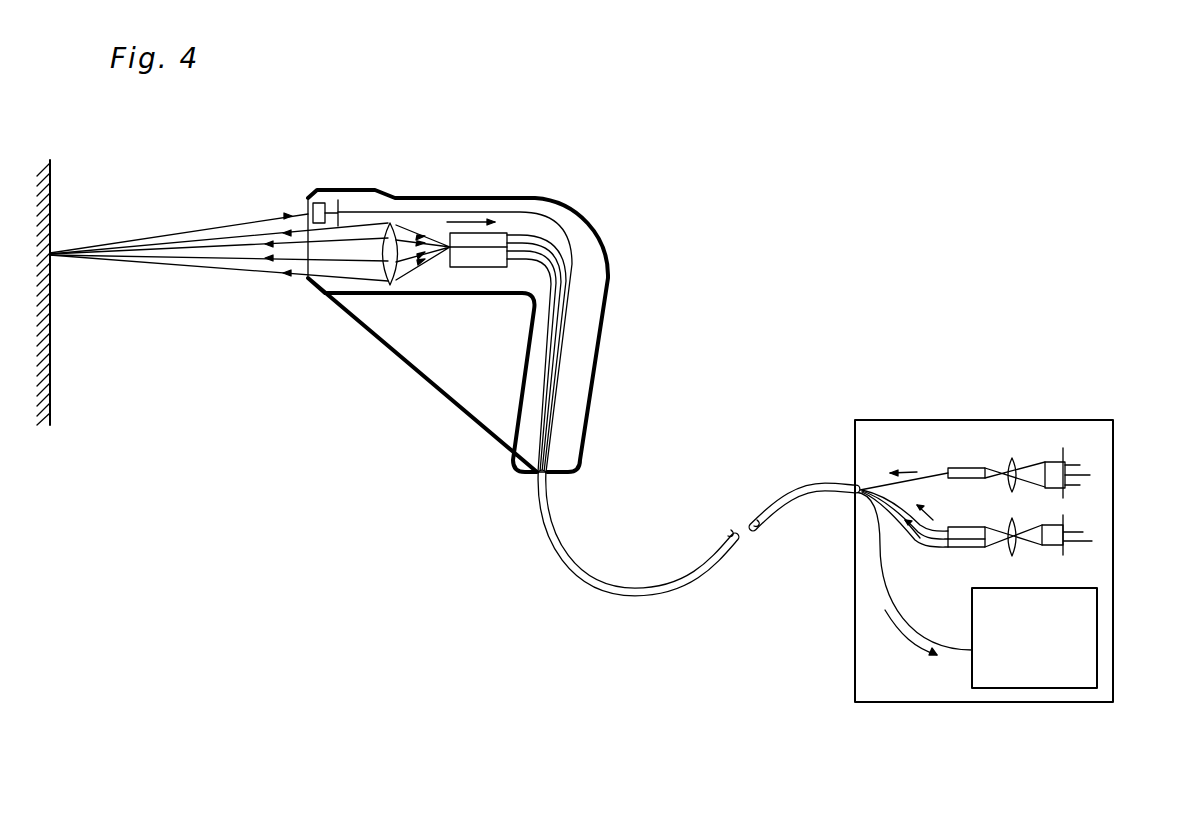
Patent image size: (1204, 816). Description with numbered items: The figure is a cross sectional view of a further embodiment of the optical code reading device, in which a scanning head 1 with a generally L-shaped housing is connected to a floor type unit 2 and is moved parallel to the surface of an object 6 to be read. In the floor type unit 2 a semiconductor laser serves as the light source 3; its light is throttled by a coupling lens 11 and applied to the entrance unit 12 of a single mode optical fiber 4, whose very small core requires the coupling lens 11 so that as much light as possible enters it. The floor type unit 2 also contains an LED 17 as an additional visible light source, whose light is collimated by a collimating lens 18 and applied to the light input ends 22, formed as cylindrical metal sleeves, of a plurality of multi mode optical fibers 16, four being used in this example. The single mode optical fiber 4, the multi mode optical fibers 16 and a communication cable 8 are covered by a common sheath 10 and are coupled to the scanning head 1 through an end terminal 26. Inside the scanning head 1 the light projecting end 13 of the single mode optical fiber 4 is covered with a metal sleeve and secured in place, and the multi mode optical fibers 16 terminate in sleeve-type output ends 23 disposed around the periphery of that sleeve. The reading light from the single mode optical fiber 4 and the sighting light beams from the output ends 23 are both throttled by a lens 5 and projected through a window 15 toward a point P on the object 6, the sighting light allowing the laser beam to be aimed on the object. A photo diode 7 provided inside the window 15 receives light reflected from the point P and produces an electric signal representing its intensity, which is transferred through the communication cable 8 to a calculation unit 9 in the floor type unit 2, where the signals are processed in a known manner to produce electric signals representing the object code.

The scanning head 1 is at (577, 215).
The floor type unit 2 is at (1058, 702).
The light source 3 is at (1055, 468).
The single mode optical fiber 4 is at (567, 290).
The lens 5 is at (388, 228).
The object 6 is at (55, 280).
The photo diode 7 is at (320, 208).
The communication cable 8 is at (570, 350).
The calculation unit 9 is at (1068, 632).
The sheath 10 is at (705, 568).
The lens 11 is at (1013, 460).
The entrance unit 12 is at (965, 471).
The light projecting end 13 is at (485, 248).
The window 15 is at (307, 253).
The multi mode optical fibers 16 is at (557, 282).
The LED 17 is at (1050, 530).
The collimating lens 18 is at (1022, 550).
The light input end 22 is at (965, 532).
The output ends 23 is at (466, 260).
The end terminal 26 is at (532, 483).
The point P is at (58, 252).